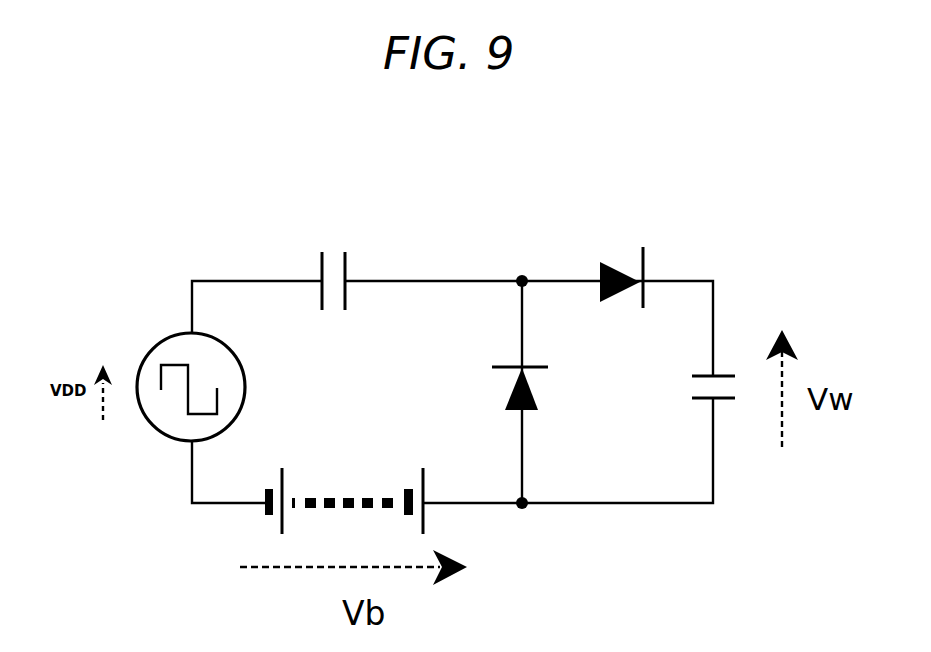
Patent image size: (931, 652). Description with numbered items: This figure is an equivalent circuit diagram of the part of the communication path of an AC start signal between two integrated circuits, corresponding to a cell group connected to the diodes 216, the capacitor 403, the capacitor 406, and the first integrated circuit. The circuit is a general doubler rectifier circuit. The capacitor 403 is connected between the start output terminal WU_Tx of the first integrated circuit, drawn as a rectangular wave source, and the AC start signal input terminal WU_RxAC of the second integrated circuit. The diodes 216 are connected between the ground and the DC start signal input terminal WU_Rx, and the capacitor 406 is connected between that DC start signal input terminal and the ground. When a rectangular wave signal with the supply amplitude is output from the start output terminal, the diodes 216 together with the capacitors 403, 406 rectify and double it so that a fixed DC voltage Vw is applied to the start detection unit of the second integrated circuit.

The capacitor 403 is at (333, 261).
The diodes 216 is at (623, 300).
The capacitor 406 is at (683, 392).